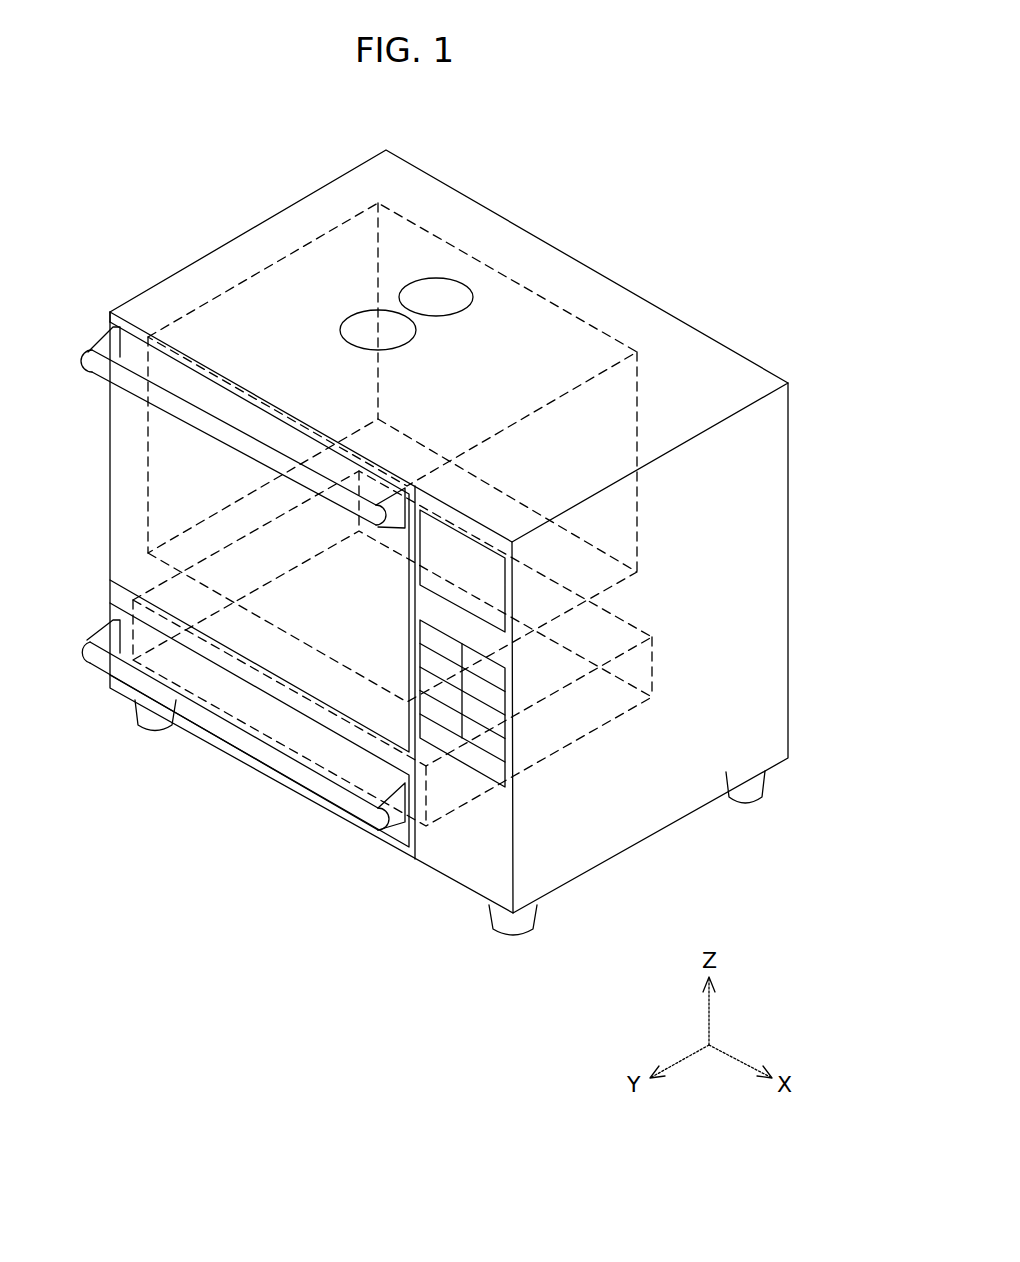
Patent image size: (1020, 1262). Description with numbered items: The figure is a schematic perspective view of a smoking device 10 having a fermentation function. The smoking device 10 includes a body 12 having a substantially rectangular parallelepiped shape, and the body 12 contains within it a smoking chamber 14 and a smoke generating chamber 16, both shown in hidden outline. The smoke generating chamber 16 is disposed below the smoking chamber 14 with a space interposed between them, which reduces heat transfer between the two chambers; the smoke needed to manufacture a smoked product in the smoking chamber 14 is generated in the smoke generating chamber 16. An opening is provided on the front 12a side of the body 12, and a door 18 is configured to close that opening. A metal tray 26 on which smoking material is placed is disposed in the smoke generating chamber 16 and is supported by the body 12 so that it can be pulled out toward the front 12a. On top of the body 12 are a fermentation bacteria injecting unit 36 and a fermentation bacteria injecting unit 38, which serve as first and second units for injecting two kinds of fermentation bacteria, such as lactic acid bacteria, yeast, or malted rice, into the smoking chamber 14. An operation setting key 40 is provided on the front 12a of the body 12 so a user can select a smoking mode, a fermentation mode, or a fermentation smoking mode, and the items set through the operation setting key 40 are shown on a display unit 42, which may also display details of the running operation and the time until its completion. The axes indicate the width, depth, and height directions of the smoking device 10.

The smoking device 10 is at (690, 277).
The body 12 is at (270, 230).
The front 12a is at (217, 818).
The smoking chamber 14 is at (623, 502).
The smoke generating chamber 16 is at (648, 664).
The door 18 is at (127, 488).
The tray 26 is at (405, 820).
The fermentation bacteria injecting unit 36 is at (358, 322).
The fermentation bacteria injecting unit 38 is at (426, 285).
The operation setting key 40 is at (478, 755).
The display unit 42 is at (423, 578).